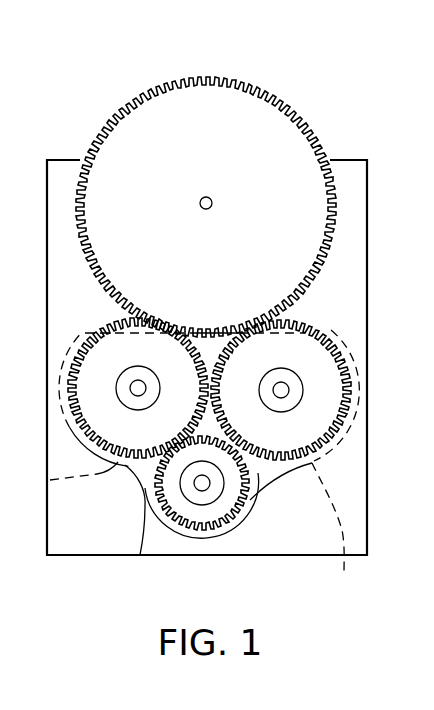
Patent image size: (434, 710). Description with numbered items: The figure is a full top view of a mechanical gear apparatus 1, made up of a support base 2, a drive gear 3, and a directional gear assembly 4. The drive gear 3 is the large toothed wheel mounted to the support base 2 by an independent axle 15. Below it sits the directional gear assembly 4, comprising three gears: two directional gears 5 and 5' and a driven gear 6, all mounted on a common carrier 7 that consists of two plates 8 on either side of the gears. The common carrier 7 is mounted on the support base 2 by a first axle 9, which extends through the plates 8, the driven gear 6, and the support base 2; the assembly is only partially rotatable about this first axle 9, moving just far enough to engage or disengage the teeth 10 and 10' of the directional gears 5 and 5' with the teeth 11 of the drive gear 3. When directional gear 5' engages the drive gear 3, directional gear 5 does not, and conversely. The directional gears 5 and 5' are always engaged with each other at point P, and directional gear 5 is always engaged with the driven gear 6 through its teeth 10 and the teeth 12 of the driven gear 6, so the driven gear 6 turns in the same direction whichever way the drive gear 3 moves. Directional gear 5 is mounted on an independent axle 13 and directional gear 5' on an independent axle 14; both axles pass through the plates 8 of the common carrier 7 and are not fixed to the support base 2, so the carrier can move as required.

The mechanical gear apparatus 1 is at (374, 106).
The support base 2 is at (63, 170).
The drive gear 3 is at (292, 130).
The directional gear assembly 4 is at (120, 488).
The directional gear 5 is at (134, 367).
The first directional gear 5' is at (282, 360).
The driven gear 6 is at (226, 516).
The common carrier 7 is at (332, 534).
The plate 8 is at (45, 487).
The first axle 9 is at (202, 484).
The teeth of directional gear 10 is at (102, 295).
The teeth of first directional gear 10' is at (228, 325).
The teeth of drive gear 11 is at (137, 312).
The teeth of driven gear 12 is at (140, 555).
The independent axle 13 is at (140, 387).
The independent axle 14 is at (281, 392).
The independent axle 15 is at (214, 207).
The point P is at (223, 388).